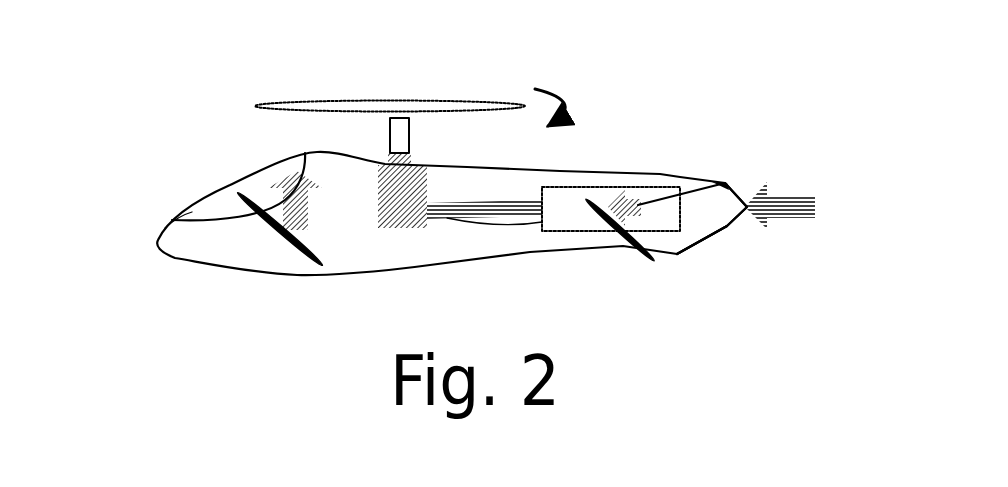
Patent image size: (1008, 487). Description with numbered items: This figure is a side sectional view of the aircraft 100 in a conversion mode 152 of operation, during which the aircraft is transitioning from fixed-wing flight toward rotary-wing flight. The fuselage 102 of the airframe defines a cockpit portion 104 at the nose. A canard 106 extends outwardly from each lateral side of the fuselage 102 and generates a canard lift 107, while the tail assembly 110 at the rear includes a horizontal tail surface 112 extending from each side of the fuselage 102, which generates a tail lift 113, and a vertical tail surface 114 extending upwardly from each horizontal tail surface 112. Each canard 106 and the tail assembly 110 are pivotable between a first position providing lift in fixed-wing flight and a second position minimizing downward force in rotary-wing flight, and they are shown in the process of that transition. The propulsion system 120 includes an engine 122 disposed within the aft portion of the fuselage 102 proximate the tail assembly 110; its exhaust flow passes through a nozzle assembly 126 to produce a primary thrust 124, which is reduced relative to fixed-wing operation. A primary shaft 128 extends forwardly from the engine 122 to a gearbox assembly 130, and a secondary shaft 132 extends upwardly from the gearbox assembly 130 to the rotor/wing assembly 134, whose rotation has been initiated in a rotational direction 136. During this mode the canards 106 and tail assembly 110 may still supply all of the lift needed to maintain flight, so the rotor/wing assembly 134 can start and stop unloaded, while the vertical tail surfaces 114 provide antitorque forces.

The aircraft 100 is at (131, 57).
The fuselage 102 is at (188, 261).
The cockpit portion 104 is at (198, 191).
The canard 106 is at (287, 243).
The canard lift 107 is at (283, 171).
The tail assembly 110 is at (747, 78).
The horizontal tail surface 112 is at (637, 252).
The tail lift 113 is at (635, 192).
The vertical tail surface 114 is at (728, 184).
The propulsion system 120 is at (330, 43).
The engine 122 is at (610, 187).
The primary thrust 124 is at (785, 216).
The nozzle assembly 126 is at (720, 228).
The primary shaft 128 is at (480, 215).
The gearbox assembly 130 is at (403, 228).
The secondary shaft 132 is at (389, 152).
The rotor/wing assembly 134 is at (313, 101).
The rotational direction 136 is at (563, 103).
The conversion mode 152 is at (598, 64).